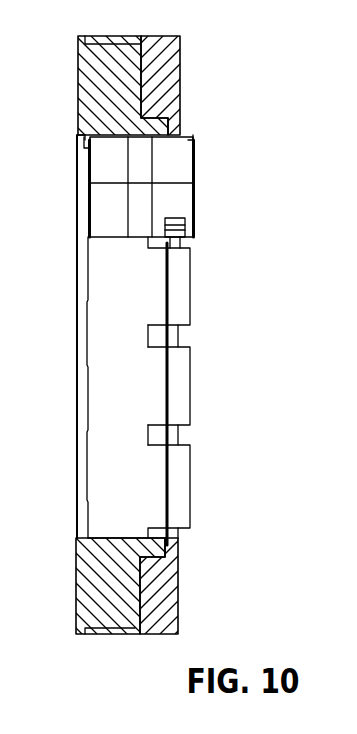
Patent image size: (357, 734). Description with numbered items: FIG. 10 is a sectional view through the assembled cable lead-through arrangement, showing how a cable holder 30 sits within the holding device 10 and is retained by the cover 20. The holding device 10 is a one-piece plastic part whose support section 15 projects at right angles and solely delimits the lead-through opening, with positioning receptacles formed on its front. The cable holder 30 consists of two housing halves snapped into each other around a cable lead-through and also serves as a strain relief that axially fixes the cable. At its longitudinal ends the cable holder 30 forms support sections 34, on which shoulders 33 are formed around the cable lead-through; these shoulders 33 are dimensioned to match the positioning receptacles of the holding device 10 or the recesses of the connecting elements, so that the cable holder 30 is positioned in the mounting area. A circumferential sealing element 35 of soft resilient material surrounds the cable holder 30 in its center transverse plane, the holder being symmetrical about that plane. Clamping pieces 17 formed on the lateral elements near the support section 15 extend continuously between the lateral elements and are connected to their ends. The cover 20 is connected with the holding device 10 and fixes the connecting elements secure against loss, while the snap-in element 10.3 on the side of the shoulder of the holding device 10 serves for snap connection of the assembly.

The holding device 10 is at (82, 93).
The snap-in element 10.3 is at (118, 636).
The support section 15 is at (84, 138).
The clamping piece 17 is at (182, 272).
The cover 20 is at (172, 66).
The cable holder 30 is at (172, 159).
The shoulder 33 is at (182, 140).
The support section 34 is at (187, 135).
The circumferential sealing element 35 is at (138, 222).